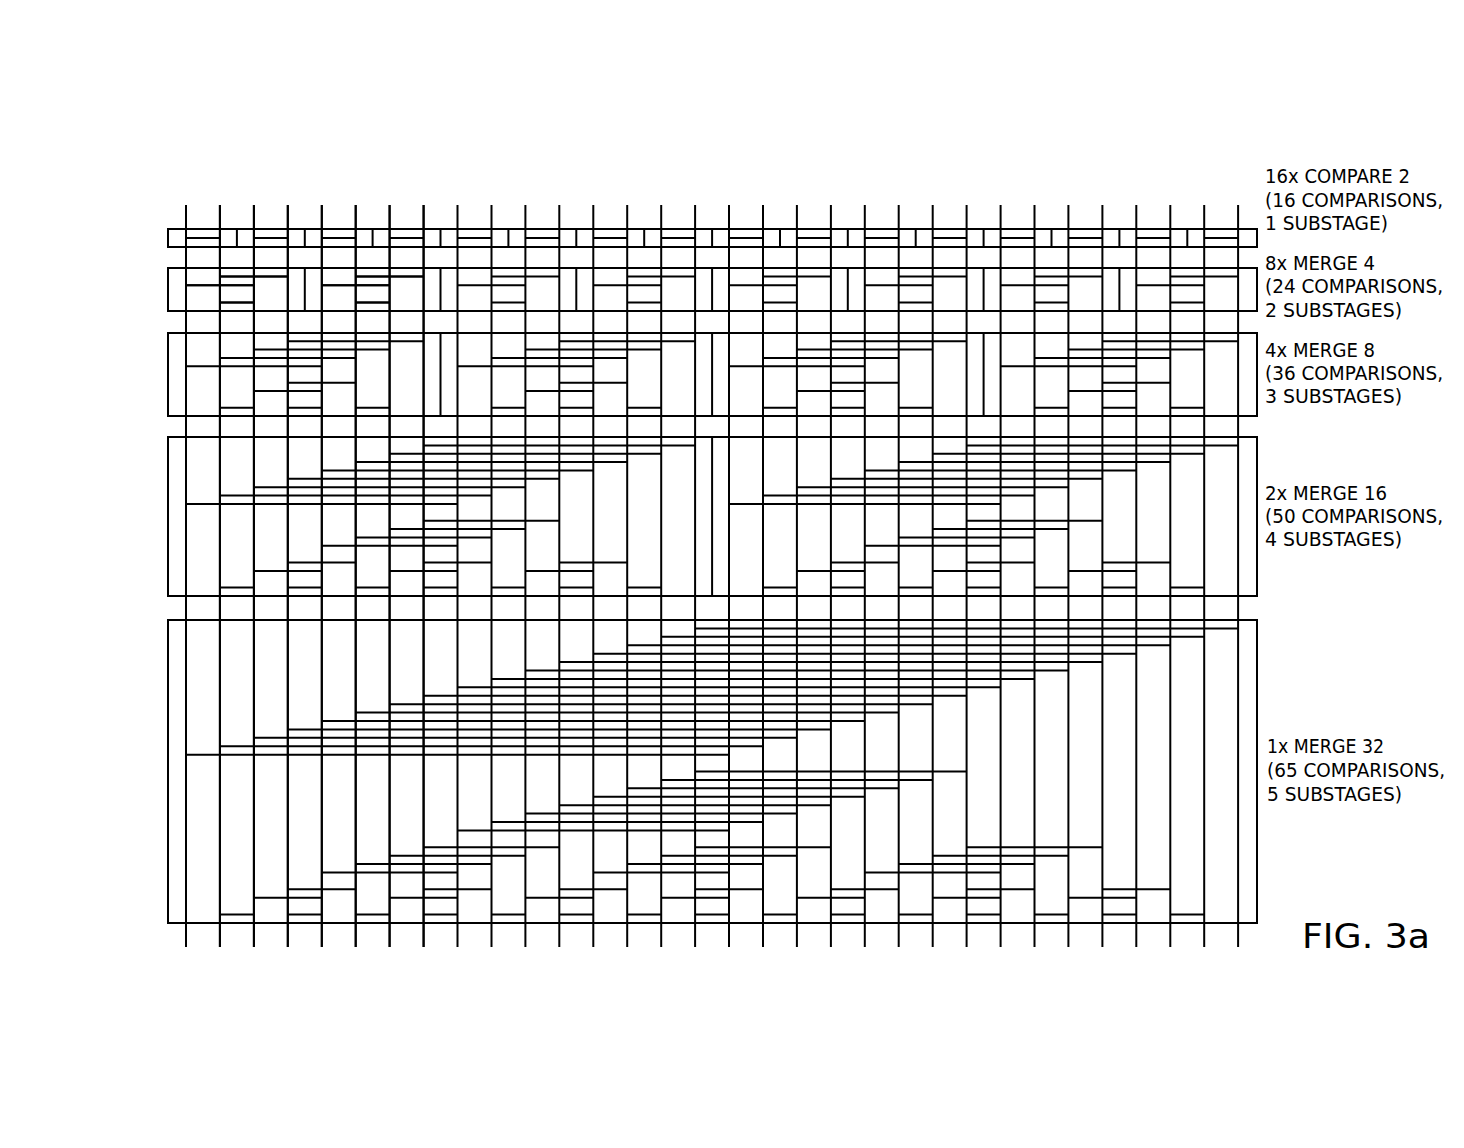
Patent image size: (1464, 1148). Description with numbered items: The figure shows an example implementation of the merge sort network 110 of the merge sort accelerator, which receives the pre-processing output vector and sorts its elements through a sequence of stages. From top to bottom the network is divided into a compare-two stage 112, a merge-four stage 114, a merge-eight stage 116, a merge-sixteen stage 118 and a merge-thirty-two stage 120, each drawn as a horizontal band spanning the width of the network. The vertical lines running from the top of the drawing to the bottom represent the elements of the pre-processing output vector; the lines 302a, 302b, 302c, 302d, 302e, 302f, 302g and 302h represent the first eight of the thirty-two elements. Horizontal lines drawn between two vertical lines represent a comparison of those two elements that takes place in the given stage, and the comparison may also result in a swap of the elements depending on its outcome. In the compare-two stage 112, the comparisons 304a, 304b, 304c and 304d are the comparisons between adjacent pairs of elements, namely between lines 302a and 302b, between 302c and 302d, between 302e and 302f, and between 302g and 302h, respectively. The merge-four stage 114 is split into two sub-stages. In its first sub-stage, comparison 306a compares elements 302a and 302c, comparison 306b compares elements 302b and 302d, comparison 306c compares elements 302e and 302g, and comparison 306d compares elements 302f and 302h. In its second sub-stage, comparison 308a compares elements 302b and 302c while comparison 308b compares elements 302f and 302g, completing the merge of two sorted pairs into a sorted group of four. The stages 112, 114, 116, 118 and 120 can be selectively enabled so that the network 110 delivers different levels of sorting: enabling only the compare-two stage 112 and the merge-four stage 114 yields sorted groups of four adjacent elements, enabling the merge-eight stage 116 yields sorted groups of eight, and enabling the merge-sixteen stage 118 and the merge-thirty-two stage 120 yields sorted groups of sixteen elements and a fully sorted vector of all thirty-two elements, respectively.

The merge sort network 110 is at (128, 111).
The compare 2 stage 112 is at (1084, 220).
The merge 4 stage 114 is at (1147, 260).
The merge 8 stage 116 is at (1262, 411).
The merge 16 stage 118 is at (1264, 564).
The merge 32 stage 120 is at (1263, 838).
The line 302a is at (185, 217).
The line 302b is at (220, 223).
The line 302c is at (255, 217).
The line 302d is at (288, 213).
The line 302e is at (323, 228).
The line 302f is at (356, 228).
The line 302g is at (387, 220).
The line 302h is at (423, 222).
The comparison 304a is at (208, 228).
The comparison 304b is at (270, 226).
The comparison 304c is at (352, 238).
The comparison 304d is at (403, 237).
The comparison 306a is at (203, 284).
The comparison 306b is at (270, 277).
The comparison 306c is at (340, 287).
The comparison 306d is at (407, 277).
The comparison 308a is at (237, 302).
The comparison 308b is at (373, 302).